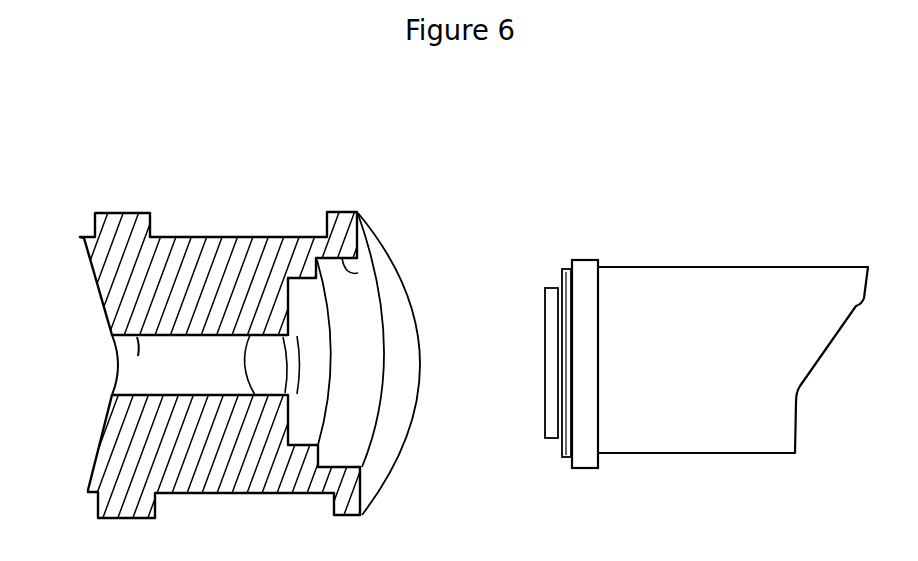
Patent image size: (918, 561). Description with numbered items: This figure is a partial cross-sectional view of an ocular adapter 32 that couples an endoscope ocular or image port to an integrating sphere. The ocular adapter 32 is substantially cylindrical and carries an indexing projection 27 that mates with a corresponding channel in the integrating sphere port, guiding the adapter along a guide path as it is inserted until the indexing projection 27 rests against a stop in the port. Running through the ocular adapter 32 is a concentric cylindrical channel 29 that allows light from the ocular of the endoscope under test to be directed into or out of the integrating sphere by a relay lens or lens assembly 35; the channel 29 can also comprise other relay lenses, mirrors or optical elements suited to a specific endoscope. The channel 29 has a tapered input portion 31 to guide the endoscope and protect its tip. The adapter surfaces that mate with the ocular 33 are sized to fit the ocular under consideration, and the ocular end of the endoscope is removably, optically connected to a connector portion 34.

The indexing projection 27 is at (152, 213).
The concentric cylindrical channel 29 is at (135, 335).
The tapered input portion 31 is at (545, 312).
The ocular adapter 32 is at (356, 196).
The ocular 33 is at (702, 266).
The connector portion 34 is at (358, 274).
The relay lens or lens assembly 35 is at (267, 345).